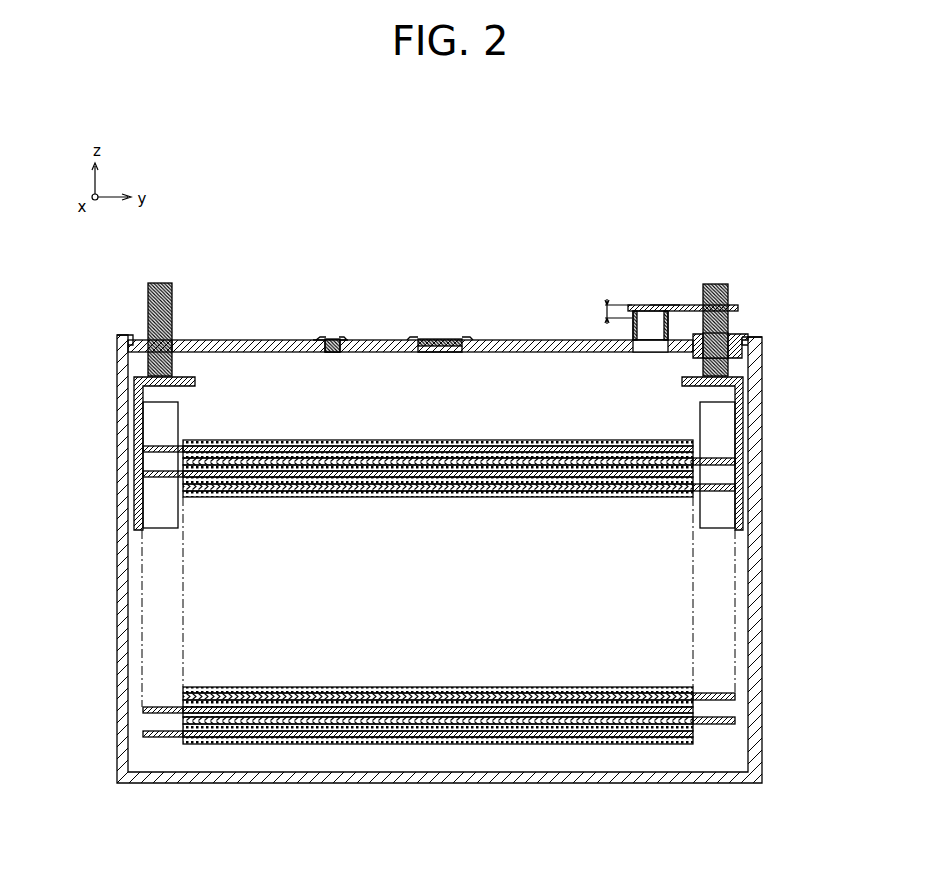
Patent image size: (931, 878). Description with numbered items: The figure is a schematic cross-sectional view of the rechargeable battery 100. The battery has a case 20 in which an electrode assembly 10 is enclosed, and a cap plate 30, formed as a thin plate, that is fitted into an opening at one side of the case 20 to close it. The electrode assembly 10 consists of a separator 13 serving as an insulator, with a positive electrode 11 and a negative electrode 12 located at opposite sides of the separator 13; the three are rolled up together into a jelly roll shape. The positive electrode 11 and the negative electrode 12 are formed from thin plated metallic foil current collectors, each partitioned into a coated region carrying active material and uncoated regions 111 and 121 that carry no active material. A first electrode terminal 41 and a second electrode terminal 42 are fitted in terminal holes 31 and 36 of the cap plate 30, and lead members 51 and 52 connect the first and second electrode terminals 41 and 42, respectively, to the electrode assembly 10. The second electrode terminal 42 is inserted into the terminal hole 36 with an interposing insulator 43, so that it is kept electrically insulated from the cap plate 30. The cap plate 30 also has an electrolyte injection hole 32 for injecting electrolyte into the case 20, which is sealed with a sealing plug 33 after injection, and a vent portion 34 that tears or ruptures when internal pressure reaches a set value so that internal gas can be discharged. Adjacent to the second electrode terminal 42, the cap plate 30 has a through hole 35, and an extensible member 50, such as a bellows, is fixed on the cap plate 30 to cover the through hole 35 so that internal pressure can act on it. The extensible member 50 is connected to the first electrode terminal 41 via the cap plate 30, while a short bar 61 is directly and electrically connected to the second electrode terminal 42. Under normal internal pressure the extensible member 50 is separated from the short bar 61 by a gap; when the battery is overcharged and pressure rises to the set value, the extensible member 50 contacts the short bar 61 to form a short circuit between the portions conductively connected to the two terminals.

The rechargeable battery 100 is at (657, 202).
The electrode assembly 10 is at (439, 640).
The positive electrode 11 is at (262, 744).
The negative electrode 12 is at (312, 737).
The separator 13 is at (440, 720).
The uncoated region 111 is at (160, 714).
The uncoated region 121 is at (710, 724).
The case 20 is at (752, 572).
The cap plate 30 is at (512, 340).
The terminal hole 31 is at (174, 326).
The electrolyte injection hole 32 is at (330, 352).
The sealing plug 33 is at (332, 338).
The vent portion 34 is at (444, 338).
The through hole 35 is at (652, 352).
The terminal hole 36 is at (738, 308).
The first electrode terminal 41 is at (163, 283).
The second electrode terminal 42 is at (715, 284).
The insulator 43 is at (745, 340).
The extensible member 50 is at (636, 346).
The lead member 51 is at (137, 393).
The lead member 52 is at (743, 383).
The short bar 61 is at (665, 305).